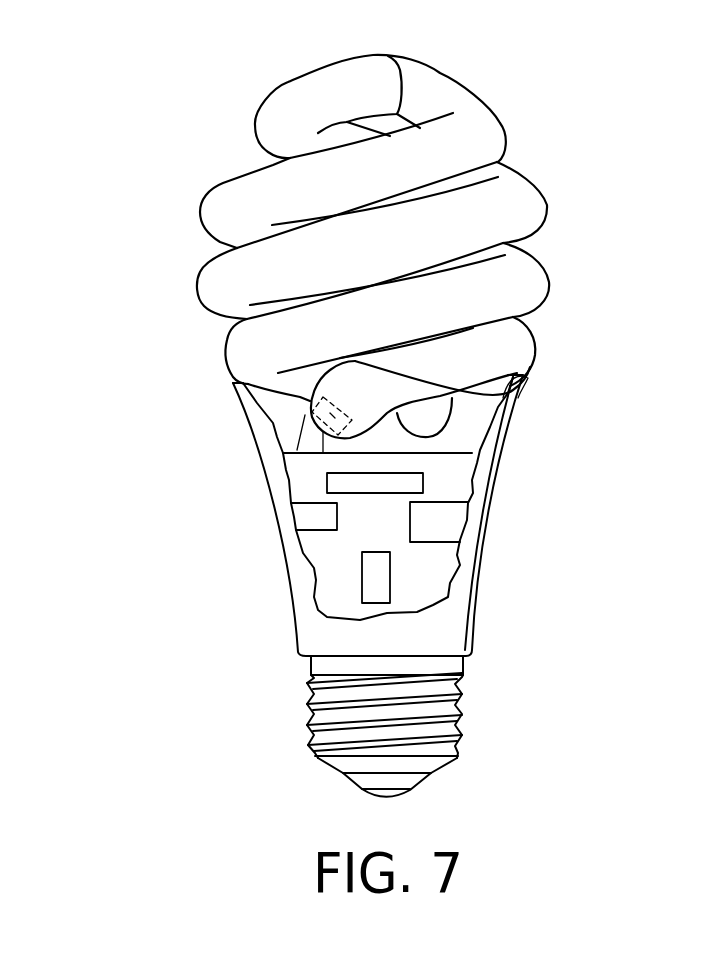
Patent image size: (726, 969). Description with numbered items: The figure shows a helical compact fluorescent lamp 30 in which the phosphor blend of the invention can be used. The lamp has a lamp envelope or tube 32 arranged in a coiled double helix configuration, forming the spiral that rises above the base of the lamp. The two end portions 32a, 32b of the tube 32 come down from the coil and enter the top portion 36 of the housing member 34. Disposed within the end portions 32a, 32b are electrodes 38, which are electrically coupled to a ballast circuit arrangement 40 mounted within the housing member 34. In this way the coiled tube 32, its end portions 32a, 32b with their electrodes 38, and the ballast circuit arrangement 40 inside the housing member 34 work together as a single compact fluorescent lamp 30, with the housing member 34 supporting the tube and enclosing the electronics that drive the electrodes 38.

The helical compact fluorescent lamp 30 is at (415, 426).
The lamp envelope or tube 32 is at (477, 131).
The end portion 32a is at (305, 433).
The end portion 32b is at (430, 421).
The housing member 34 is at (477, 503).
The top portion 36 is at (525, 374).
The electrodes 38 is at (317, 423).
The ballast circuit arrangement 40 is at (312, 515).